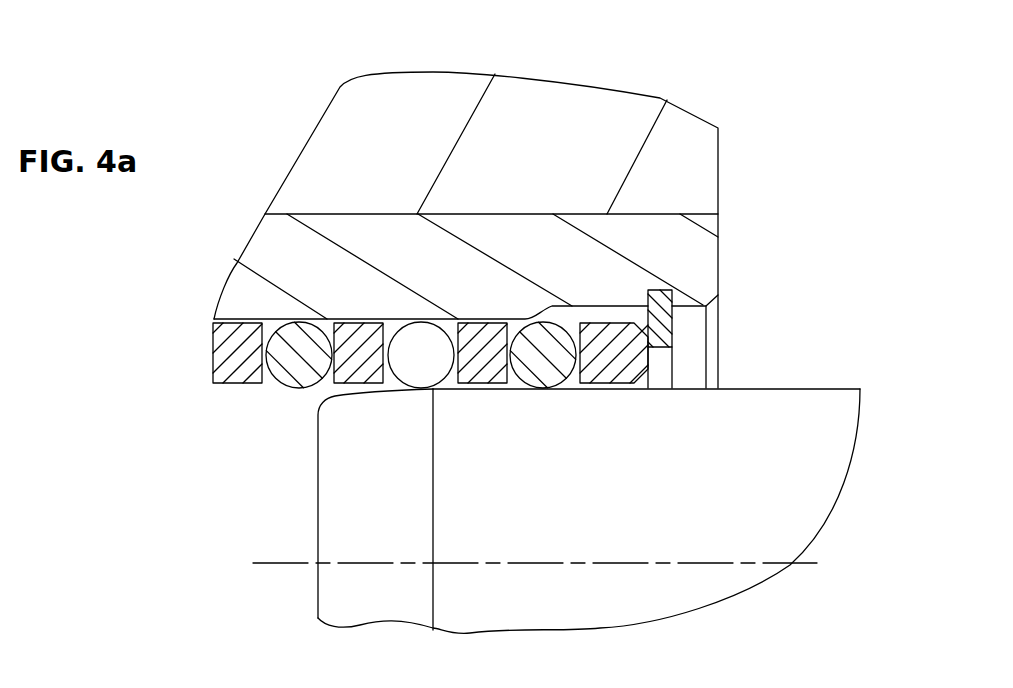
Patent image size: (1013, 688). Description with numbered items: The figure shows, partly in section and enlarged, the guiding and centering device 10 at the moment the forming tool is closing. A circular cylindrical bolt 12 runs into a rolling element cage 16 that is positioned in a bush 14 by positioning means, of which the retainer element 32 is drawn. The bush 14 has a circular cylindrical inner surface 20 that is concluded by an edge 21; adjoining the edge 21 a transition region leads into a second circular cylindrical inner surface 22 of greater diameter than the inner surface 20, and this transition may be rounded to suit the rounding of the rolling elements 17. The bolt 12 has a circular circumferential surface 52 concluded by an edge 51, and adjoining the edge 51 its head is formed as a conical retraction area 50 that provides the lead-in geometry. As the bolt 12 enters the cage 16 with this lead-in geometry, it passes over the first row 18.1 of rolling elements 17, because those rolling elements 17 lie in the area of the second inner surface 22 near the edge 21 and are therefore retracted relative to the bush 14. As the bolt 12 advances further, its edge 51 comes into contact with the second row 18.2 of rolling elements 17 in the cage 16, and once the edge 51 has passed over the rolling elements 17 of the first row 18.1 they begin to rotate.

The guiding and centering device 10 is at (145, 572).
The circular cylindrical bolt 12 is at (750, 445).
The bush 14 is at (688, 255).
The rolling element cage 16 is at (233, 365).
The rolling elements 17 is at (285, 378).
The first row 18.1 is at (538, 348).
The second row 18.2 is at (413, 338).
The circular cylindrical inner surface 20 is at (310, 317).
The edge 21 is at (537, 322).
The second circular cylindrical inner surface 22 is at (602, 305).
The retainer element 32 is at (672, 347).
The conical retraction area 50 is at (326, 393).
The edge 51 is at (433, 535).
The circular circumferential surface 52 is at (765, 387).